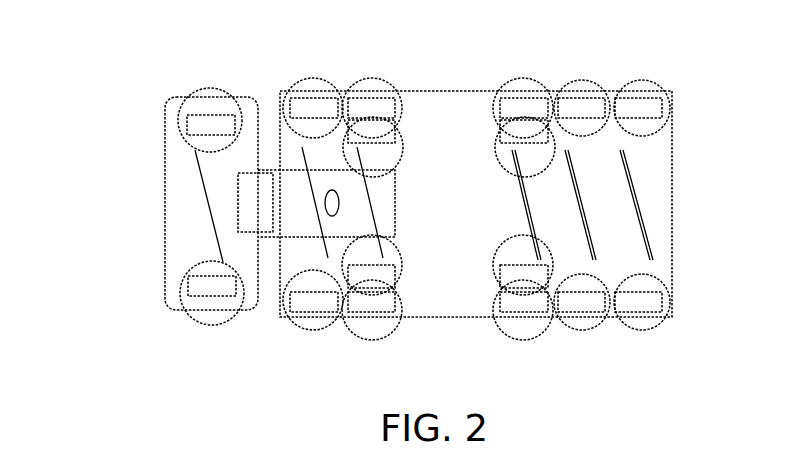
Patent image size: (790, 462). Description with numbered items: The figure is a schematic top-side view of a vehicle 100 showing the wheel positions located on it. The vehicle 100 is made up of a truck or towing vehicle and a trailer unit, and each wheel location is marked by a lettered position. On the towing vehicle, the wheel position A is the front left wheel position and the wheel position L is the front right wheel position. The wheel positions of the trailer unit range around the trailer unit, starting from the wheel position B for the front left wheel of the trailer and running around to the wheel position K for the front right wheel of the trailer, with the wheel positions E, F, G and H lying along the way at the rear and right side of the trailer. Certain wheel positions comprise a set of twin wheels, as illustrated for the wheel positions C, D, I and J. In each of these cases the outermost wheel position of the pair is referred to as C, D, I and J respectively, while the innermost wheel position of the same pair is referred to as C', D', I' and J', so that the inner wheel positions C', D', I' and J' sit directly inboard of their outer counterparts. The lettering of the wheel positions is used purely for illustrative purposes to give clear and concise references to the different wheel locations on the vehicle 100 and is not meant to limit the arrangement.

The vehicle 100 is at (145, 85).
The wheel position A is at (207, 325).
The wheel position B is at (315, 332).
The wheel position C is at (371, 336).
The wheel position C' is at (399, 265).
The wheel position D is at (521, 338).
The wheel position D' is at (504, 271).
The wheel position E is at (585, 333).
The wheel position F is at (640, 333).
The wheel position G is at (650, 80).
The wheel position H is at (585, 82).
The wheel position I is at (523, 82).
The wheel position I' is at (500, 147).
The wheel position J is at (372, 81).
The wheel position J' is at (391, 136).
The wheel position K is at (316, 78).
The wheel position L is at (212, 88).